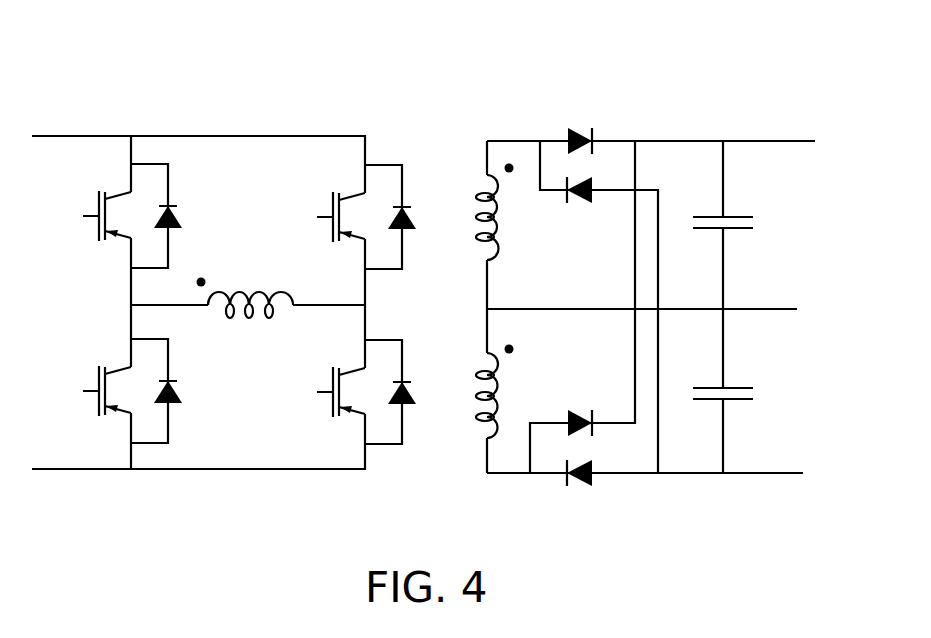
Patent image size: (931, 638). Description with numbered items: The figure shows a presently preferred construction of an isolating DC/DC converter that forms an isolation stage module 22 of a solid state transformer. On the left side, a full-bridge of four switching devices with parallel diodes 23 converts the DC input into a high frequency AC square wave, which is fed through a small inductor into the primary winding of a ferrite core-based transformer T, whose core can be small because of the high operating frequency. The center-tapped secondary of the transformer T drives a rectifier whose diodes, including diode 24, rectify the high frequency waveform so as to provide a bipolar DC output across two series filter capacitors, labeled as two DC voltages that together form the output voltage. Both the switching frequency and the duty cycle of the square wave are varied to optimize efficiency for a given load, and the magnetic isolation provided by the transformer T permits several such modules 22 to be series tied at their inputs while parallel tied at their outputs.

The isolation stage module 22 is at (648, 65).
The full-bridge inverter 23 is at (192, 125).
The rectifier diode 24 is at (608, 124).
The ferrite core-based transformer T is at (481, 122).